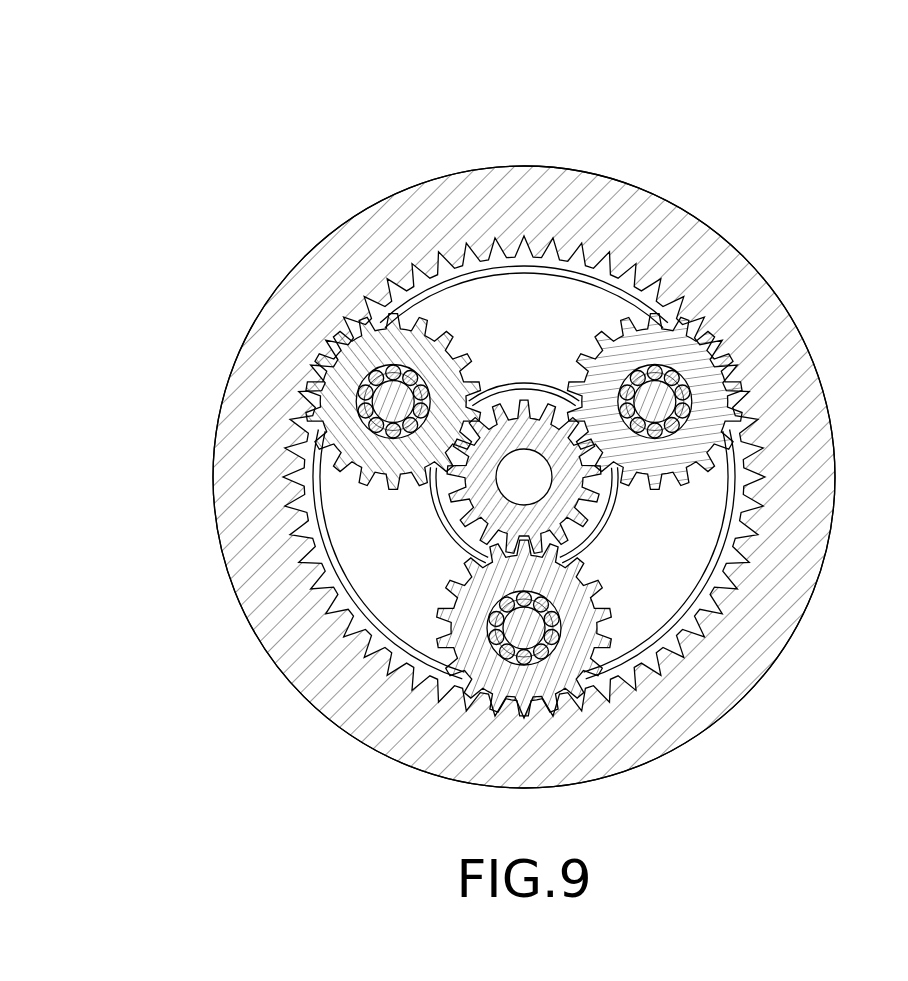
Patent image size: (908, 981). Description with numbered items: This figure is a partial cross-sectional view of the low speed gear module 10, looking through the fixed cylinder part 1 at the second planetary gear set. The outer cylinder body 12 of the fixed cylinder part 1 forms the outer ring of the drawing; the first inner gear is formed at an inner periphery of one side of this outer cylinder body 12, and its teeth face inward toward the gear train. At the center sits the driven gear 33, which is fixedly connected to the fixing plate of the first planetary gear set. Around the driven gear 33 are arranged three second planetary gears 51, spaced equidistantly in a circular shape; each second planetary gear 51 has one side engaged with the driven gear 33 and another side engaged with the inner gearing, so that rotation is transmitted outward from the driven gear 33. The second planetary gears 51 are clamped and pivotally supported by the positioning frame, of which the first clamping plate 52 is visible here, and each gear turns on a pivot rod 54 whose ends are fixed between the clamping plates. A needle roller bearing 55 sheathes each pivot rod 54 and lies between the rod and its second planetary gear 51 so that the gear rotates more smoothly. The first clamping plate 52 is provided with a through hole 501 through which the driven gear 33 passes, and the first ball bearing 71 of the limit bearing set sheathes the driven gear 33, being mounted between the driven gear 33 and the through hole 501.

The low speed gear module 10 is at (536, 78).
The fixed cylinder part 1 is at (618, 175).
The outer cylinder body 12 is at (708, 240).
The second planetary gear 51 is at (703, 370).
The pivot rod 54 is at (655, 401).
The needle roller bearing 55 is at (683, 403).
The first clamping plate 52 is at (680, 535).
The first ball bearing 71 is at (445, 498).
The driven gear 33 is at (457, 508).
The through hole 501 is at (457, 543).